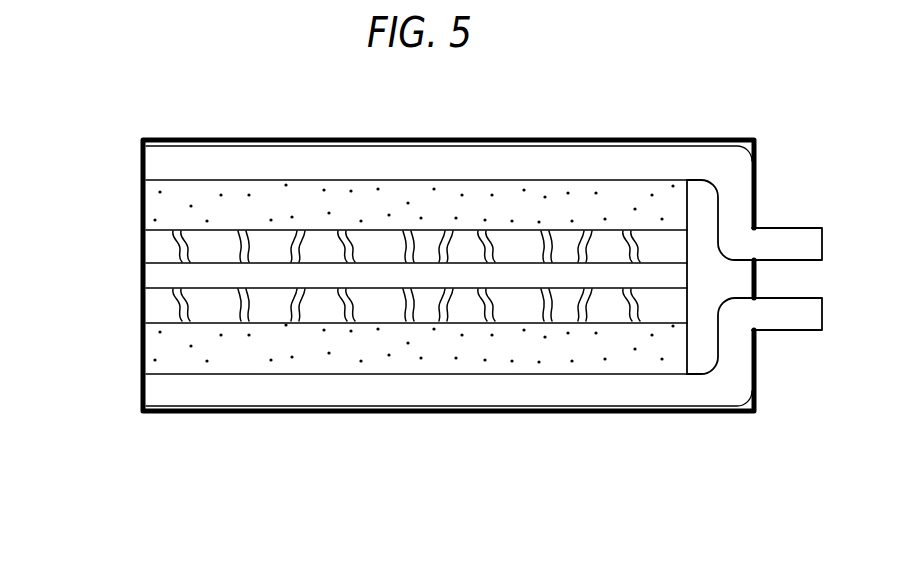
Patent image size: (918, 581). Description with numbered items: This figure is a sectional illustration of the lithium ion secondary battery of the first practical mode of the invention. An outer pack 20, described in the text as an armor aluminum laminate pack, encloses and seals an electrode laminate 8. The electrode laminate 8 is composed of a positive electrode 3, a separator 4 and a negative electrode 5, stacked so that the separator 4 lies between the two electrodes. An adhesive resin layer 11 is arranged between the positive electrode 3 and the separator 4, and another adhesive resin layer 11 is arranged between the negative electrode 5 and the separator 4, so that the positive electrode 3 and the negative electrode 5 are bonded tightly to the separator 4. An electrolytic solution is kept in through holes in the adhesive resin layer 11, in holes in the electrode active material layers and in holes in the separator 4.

The battery case 20 is at (648, 138).
The electrode laminate 8 is at (45, 163).
The positive electrode 3 is at (128, 163).
The adhesive resin layer 11 is at (154, 247).
The separator 4 is at (154, 278).
The negative electrode 5 is at (126, 347).